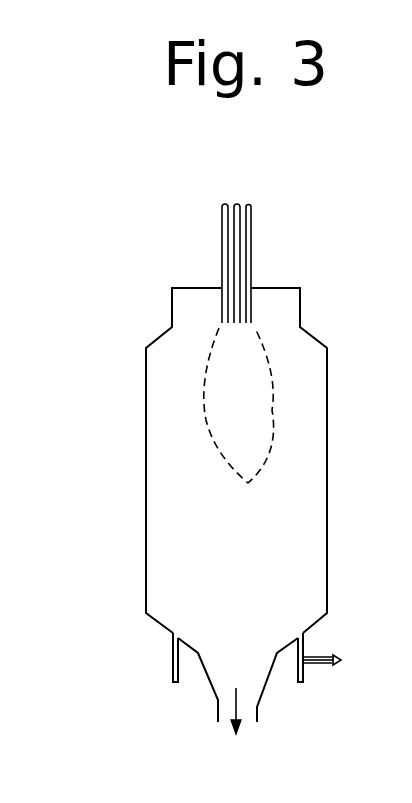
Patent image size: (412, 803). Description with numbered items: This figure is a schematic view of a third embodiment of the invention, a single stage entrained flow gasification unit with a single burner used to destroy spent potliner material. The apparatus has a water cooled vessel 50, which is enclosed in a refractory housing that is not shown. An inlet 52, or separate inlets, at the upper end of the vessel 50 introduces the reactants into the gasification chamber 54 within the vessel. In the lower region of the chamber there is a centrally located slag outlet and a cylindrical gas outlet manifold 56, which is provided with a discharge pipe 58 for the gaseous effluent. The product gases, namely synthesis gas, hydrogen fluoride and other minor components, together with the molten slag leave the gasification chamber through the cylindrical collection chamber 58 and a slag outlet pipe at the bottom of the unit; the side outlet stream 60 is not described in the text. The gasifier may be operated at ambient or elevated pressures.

The water cooled vessel 50 is at (327, 427).
The inlet 52 is at (243, 276).
The gasification chamber 54 is at (312, 479).
The cylindrical gas outlet manifold 56 is at (255, 717).
The discharge pipe 58 is at (173, 660).
The side outlet stream 60 is at (320, 665).